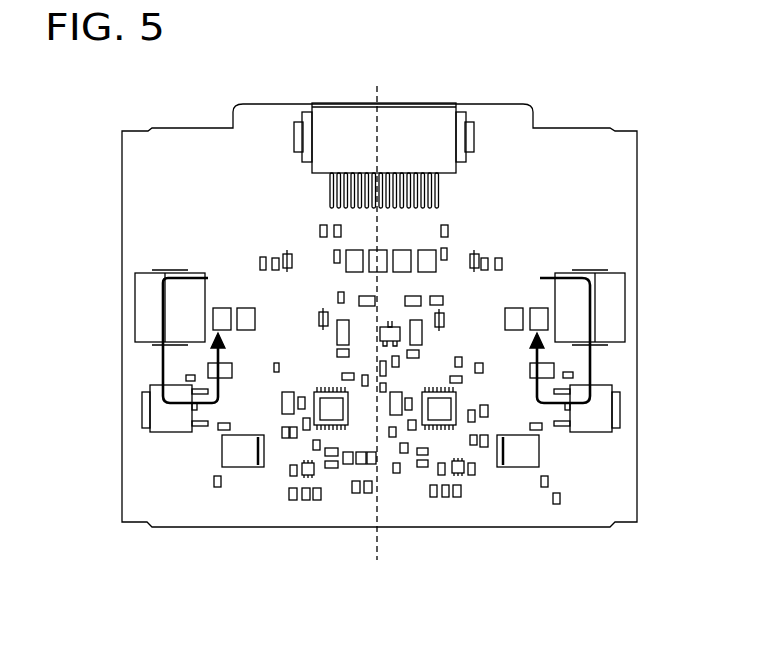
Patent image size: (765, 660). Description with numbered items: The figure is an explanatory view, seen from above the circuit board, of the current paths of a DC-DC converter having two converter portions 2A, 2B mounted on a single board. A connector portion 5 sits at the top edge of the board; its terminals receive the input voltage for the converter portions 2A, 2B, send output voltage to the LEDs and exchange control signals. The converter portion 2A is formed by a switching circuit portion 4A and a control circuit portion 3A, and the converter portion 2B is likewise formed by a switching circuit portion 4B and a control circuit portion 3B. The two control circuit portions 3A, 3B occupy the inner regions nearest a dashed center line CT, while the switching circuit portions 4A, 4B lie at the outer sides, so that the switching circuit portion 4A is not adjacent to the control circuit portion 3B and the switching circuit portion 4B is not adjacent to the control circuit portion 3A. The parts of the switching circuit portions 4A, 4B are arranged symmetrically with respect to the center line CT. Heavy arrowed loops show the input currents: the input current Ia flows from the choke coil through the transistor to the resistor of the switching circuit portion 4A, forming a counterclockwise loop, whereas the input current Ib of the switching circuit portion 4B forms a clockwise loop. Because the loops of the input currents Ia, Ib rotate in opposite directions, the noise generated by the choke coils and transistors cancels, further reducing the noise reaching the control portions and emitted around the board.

The connector portion 5 is at (443, 160).
The converter portion 2A is at (261, 421).
The converter portion 2B is at (502, 421).
The control circuit portion 3A is at (323, 406).
The control circuit portion 3B is at (429, 510).
The switching circuit portion 4A is at (199, 420).
The switching circuit portion 4B is at (561, 420).
The center line CT is at (375, 311).
The input current Ia is at (196, 327).
The input current Ib is at (559, 327).